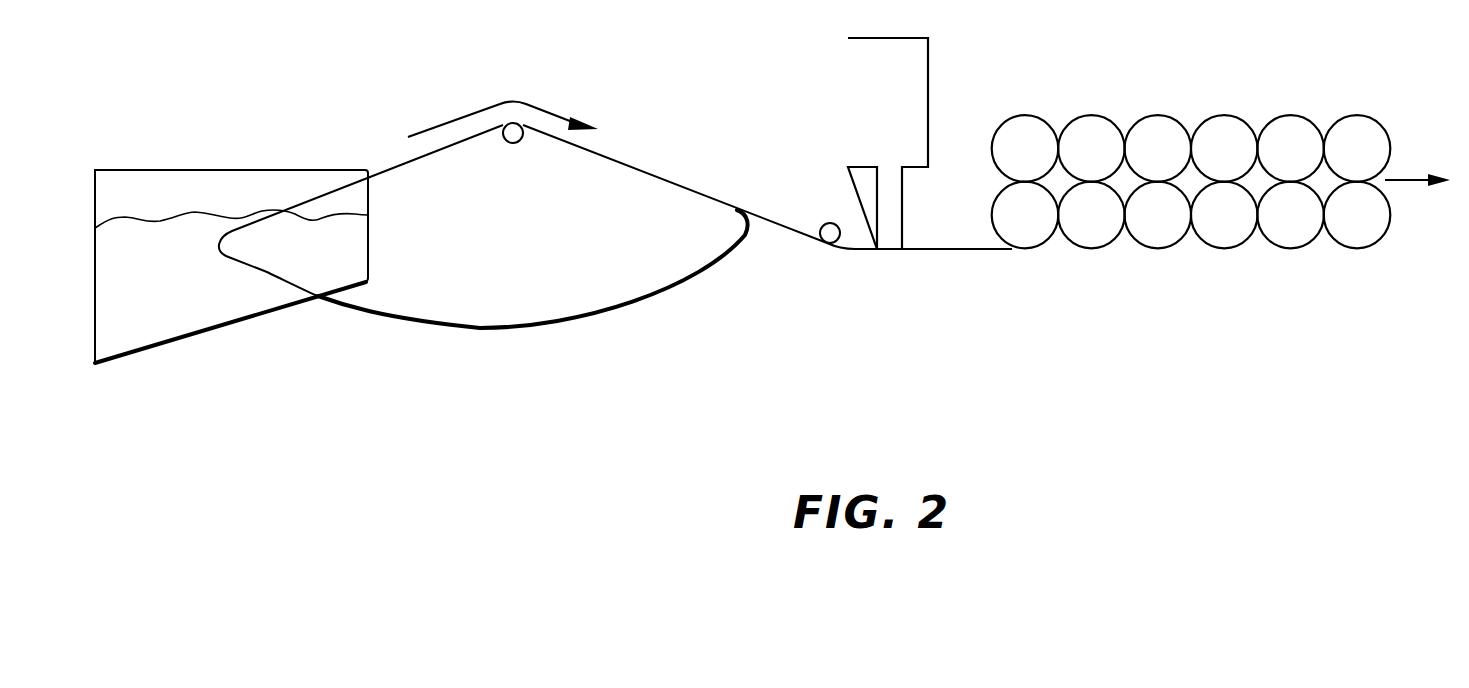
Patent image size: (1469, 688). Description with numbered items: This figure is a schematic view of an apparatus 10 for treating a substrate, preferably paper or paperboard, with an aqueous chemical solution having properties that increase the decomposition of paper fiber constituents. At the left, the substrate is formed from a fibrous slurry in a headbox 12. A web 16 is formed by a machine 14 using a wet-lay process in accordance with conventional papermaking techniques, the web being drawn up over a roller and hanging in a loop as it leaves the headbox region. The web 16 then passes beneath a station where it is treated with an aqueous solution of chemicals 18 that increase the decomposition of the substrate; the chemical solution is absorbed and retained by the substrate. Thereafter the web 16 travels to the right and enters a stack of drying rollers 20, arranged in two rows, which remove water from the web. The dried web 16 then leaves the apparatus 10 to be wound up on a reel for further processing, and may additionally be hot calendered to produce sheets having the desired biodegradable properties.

The apparatus 10 is at (1375, 420).
The headbox 12 is at (213, 168).
The machine 14 is at (513, 328).
The web 16 is at (773, 220).
The aqueous solution of chemicals 18 is at (929, 70).
The stack of drying rollers 20 is at (1193, 262).